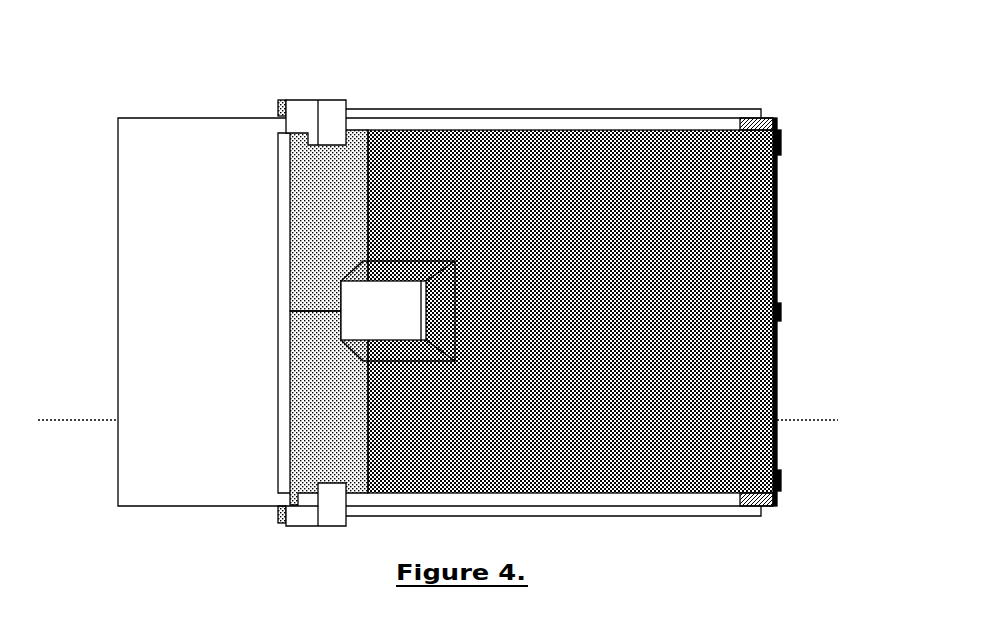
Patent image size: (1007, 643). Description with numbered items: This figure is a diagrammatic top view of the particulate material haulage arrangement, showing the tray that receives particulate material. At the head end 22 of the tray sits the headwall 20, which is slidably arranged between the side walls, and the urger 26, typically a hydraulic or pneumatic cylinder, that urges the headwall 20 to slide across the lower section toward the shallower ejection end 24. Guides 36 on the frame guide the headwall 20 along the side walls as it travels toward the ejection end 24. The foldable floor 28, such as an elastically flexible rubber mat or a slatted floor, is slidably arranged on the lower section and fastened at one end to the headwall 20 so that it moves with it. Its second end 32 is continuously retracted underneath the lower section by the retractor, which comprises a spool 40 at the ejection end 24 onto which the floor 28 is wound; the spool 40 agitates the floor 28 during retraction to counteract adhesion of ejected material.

The headwall 20 is at (318, 415).
The head end 22 is at (330, 231).
The ejection end 24 is at (785, 271).
The urger 26 is at (377, 300).
The foldable floor 28 is at (640, 192).
The second end of the floor 32 is at (790, 206).
The guides 36 is at (313, 101).
The spool 40 is at (792, 556).